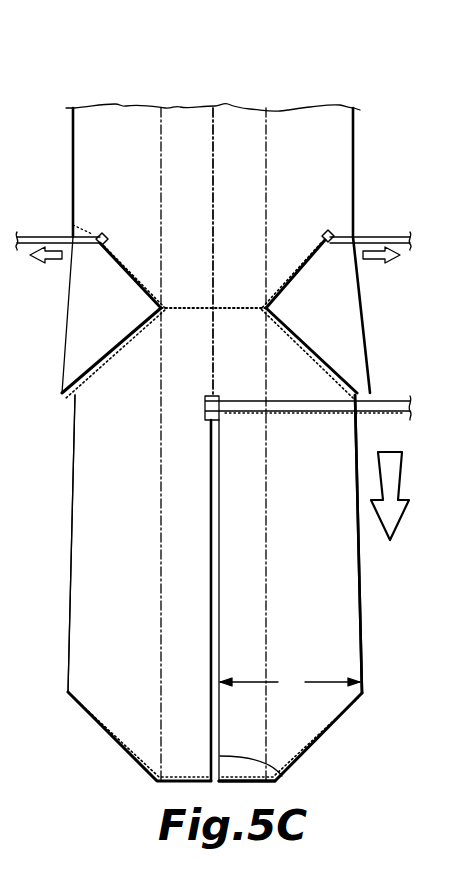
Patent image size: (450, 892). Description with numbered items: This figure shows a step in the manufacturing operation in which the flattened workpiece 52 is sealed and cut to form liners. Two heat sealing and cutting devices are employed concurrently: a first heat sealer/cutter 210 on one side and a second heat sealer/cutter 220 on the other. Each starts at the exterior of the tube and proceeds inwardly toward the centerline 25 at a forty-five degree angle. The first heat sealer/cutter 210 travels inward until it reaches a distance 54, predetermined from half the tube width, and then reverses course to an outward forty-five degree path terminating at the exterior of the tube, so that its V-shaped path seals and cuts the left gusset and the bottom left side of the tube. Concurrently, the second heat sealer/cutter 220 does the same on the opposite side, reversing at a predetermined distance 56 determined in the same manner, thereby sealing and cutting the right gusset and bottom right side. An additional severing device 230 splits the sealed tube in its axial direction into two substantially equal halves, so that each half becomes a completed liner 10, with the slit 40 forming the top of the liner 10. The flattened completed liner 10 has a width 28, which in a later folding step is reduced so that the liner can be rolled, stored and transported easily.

The liner 10 is at (93, 558).
The centerline 25 is at (213, 137).
The width 28 is at (290, 684).
The slit 40 is at (283, 778).
The flattened workpiece 52 is at (97, 460).
The distance 54 is at (333, 355).
The predetermined distance 56 is at (107, 350).
The first heat sealer/cutter 210 is at (360, 237).
The second heat sealer/cutter 220 is at (55, 238).
The severing device 230 is at (385, 400).